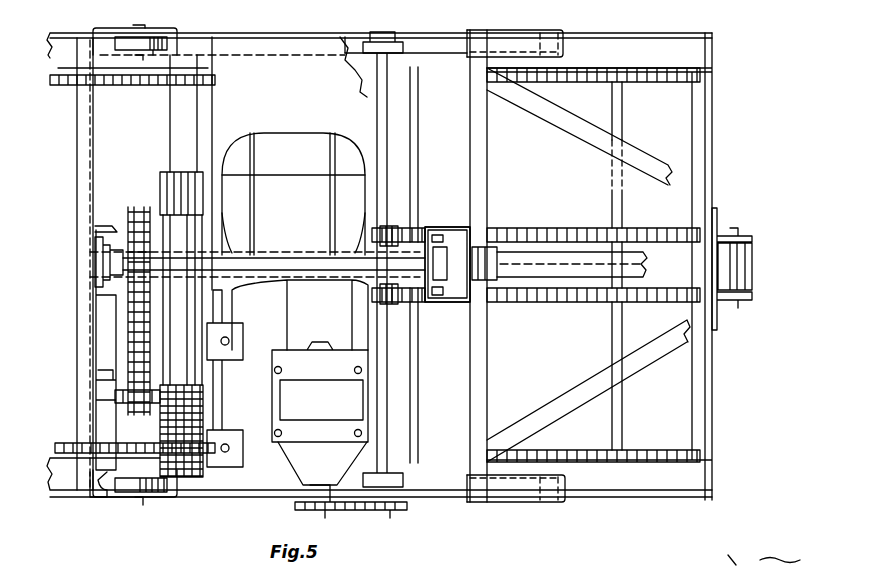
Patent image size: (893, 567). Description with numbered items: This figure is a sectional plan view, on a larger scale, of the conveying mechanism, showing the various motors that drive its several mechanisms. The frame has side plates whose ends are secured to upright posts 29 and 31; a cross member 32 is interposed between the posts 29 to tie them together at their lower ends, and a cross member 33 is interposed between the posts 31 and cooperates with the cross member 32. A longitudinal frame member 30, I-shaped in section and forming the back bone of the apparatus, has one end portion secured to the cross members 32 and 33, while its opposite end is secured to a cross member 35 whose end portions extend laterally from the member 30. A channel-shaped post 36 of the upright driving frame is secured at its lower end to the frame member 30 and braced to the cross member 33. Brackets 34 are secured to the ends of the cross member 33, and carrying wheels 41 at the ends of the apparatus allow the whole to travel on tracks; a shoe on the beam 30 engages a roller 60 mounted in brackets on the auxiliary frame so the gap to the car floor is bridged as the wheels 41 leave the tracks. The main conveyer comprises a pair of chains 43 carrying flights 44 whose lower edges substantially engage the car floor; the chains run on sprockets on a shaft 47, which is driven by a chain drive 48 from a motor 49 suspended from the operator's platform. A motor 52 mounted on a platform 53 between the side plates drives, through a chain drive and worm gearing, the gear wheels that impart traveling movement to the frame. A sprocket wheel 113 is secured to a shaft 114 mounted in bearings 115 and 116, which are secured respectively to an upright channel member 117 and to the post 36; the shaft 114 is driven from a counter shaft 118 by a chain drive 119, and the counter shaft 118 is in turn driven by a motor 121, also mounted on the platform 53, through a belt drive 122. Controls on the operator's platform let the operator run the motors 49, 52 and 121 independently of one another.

The upright post 29 is at (100, 493).
The longitudinal frame member 30 is at (644, 262).
The upright post 31 is at (466, 42).
The cross member 32 is at (88, 152).
The cross member 33 is at (479, 171).
The bracket 34 is at (525, 35).
The cross member 35 is at (754, 553).
The channel-shaped post 36 is at (455, 228).
The carrying wheels 41 is at (120, 45).
The chains 43 is at (566, 78).
The flights 44 is at (620, 182).
The shaft 47 is at (383, 403).
The chain drive 48 is at (310, 508).
The motor 49 is at (297, 450).
The motor 52 is at (287, 373).
The platform 53 is at (300, 75).
The roller 60 is at (760, 268).
The sprocket wheel 113 is at (440, 240).
The shaft 114 is at (405, 265).
The bearing 115 is at (95, 265).
The bearing 116 is at (498, 265).
The upright channel member 117 is at (107, 224).
The counter shaft 118 is at (155, 410).
The chain drive 119 is at (133, 330).
The motor 121 is at (302, 162).
The belt drive 122 is at (155, 192).